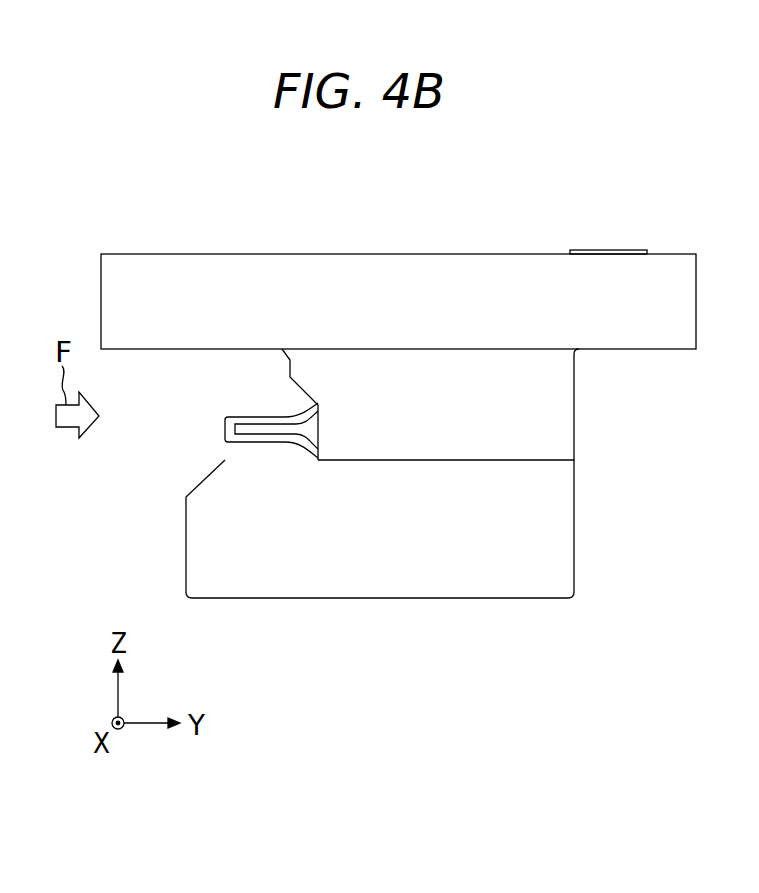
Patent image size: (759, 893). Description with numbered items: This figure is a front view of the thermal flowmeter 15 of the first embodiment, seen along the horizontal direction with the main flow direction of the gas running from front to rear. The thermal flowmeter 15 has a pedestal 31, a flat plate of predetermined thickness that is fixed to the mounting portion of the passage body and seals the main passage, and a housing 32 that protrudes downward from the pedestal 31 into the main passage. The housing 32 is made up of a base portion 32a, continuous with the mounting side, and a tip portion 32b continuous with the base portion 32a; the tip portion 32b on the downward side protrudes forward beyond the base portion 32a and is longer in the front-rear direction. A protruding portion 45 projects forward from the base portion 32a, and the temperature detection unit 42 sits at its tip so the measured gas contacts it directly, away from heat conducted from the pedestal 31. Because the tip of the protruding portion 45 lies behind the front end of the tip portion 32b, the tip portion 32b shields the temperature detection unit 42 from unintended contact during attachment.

The thermal flowmeter 15 is at (152, 201).
The pedestal 31 is at (682, 302).
The housing 32 is at (675, 370).
The base portion 32a is at (530, 383).
The tip portion 32b is at (563, 481).
The temperature detection unit 42 is at (237, 429).
The protruding portion 45 is at (272, 422).